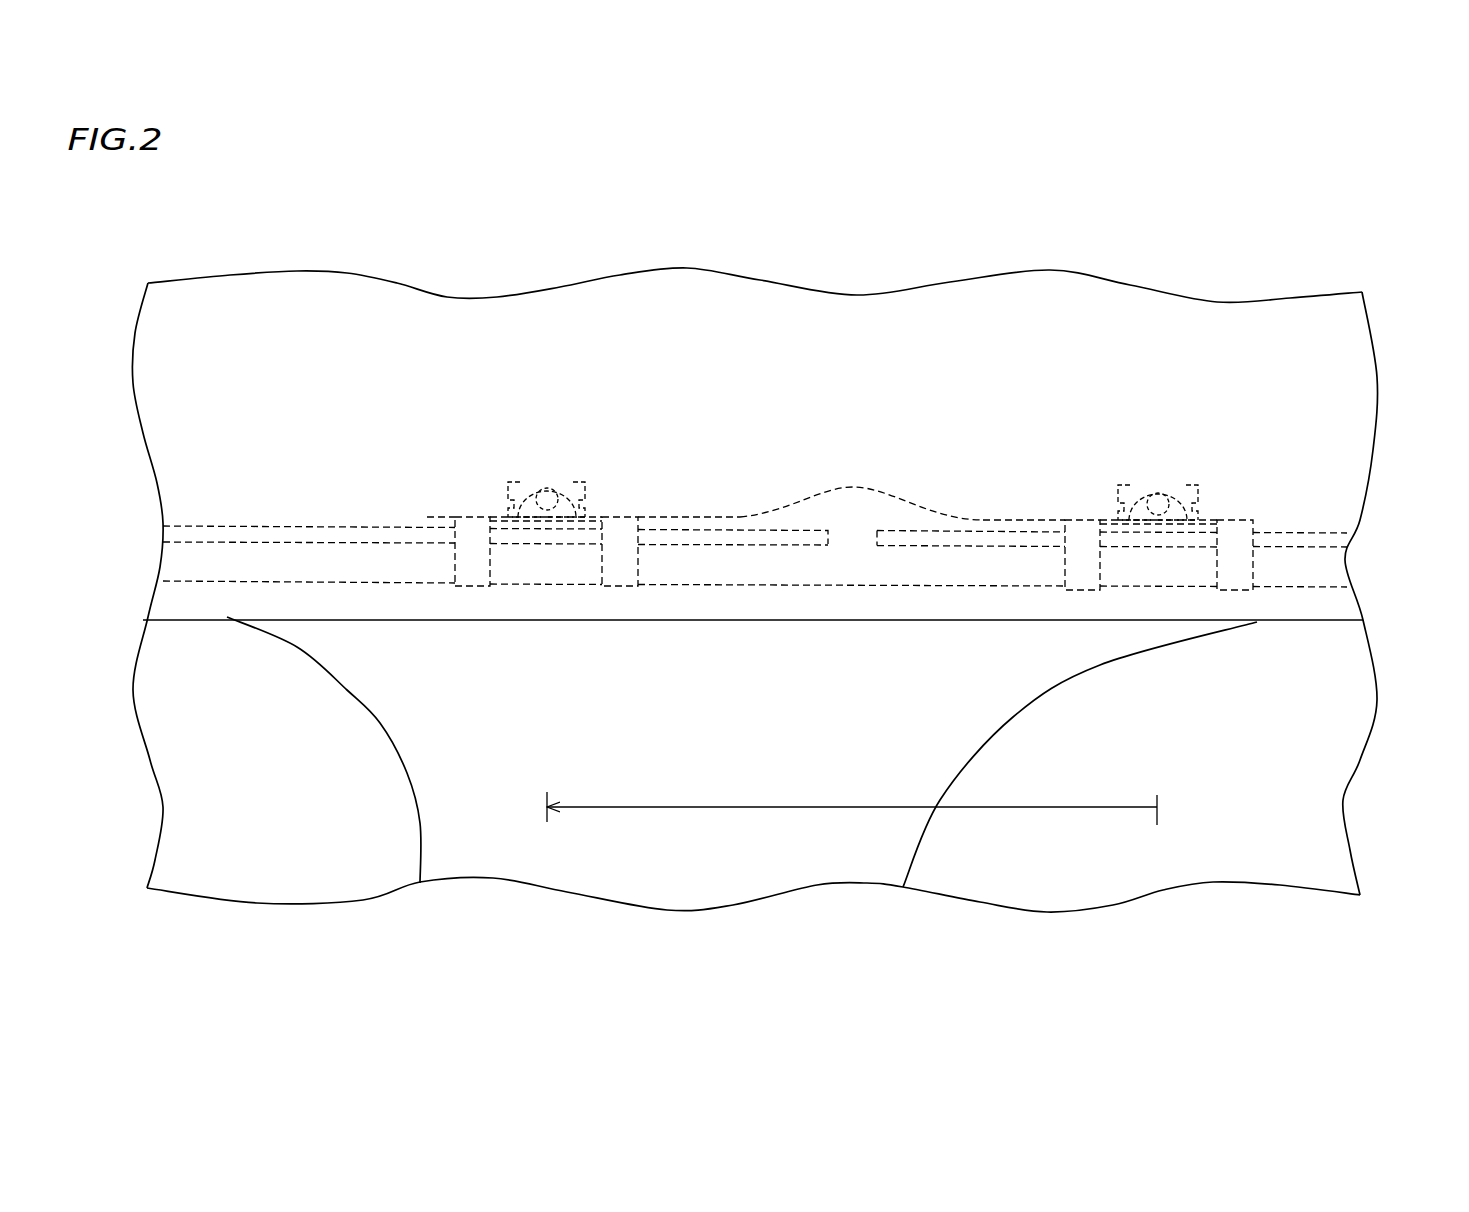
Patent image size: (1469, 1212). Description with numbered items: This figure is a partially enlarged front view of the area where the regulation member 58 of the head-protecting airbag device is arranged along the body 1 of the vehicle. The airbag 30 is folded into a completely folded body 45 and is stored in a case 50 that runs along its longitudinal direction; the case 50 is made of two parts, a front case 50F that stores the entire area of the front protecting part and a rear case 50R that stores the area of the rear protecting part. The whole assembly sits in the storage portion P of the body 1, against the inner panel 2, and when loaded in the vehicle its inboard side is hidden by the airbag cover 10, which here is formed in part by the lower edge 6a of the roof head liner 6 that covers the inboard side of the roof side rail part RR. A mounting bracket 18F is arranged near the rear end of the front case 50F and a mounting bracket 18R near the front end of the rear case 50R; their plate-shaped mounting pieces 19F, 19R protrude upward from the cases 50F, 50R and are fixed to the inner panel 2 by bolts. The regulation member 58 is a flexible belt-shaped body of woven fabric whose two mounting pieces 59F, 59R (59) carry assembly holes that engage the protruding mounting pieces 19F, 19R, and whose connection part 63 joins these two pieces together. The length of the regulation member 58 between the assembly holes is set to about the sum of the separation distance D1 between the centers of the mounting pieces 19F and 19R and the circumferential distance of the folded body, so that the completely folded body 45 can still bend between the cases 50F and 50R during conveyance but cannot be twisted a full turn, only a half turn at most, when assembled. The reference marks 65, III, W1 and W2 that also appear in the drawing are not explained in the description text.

The storage portion P is at (255, 470).
The inner panel 2 is at (733, 328).
The body 1 is at (754, 552).
The roof head liner 6 is at (852, 328).
The roof side rail part RR is at (1028, 328).
The lower edge of roof head liner 6a is at (690, 622).
The airbag cover 10 is at (753, 685).
The regulation member 58 is at (1010, 515).
The connection part 63 is at (853, 487).
The front case 50F is at (297, 523).
The rear case 50R is at (1297, 532).
The case 50 is at (794, 473).
The completely folded body 45 is at (880, 573).
The airbag 30 is at (851, 620).
The front mounting piece of regulation member 59F is at (498, 517).
The rear mounting piece of regulation member 59R is at (1262, 523).
The mounting piece of regulation member 59 is at (890, 466).
The mounting block 65 is at (472, 586).
The front mounting piece 19F is at (565, 475).
The front mounting bracket 18F is at (561, 490).
The rear mounting piece 19R is at (1182, 476).
The rear mounting bracket 18R is at (1188, 507).
The section line III is at (1158, 430).
The separation distance D1 is at (852, 819).
The front wheel arch W1 is at (287, 872).
The rear wheel arch W2 is at (1120, 877).